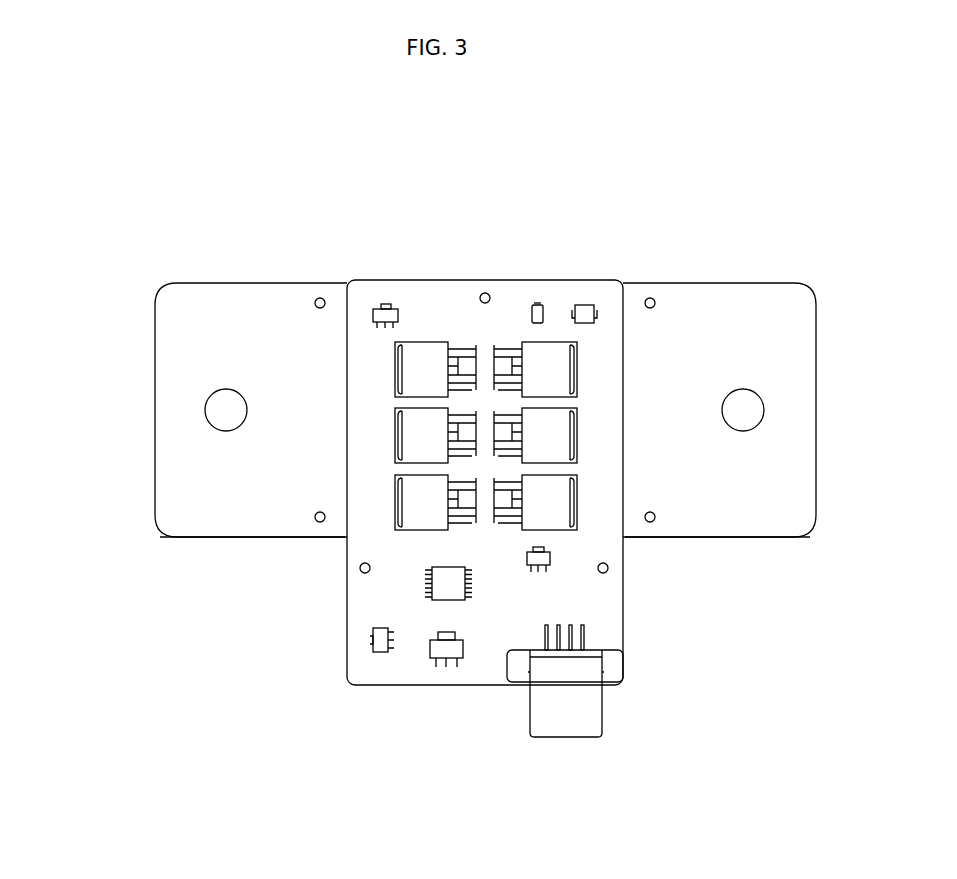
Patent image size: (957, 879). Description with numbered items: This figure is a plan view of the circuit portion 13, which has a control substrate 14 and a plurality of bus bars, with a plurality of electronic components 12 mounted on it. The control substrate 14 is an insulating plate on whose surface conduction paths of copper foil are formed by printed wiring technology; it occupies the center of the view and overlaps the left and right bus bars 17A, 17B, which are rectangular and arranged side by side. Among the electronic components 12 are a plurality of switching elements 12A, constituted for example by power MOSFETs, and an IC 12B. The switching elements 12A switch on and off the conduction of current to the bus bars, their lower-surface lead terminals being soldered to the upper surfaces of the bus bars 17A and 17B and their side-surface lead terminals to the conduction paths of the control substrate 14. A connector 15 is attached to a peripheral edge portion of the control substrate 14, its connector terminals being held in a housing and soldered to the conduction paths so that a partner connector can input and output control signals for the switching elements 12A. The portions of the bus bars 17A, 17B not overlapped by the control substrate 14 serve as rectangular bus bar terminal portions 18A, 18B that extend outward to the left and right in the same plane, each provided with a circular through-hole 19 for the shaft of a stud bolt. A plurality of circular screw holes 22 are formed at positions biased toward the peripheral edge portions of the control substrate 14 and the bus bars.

The electronic components 12 is at (533, 570).
The switching elements 12A is at (420, 505).
The IC 12B is at (440, 585).
The circuit portion 13 is at (716, 192).
The control substrate 14 is at (436, 292).
The connector 15 is at (587, 715).
The bus bar 17A is at (138, 421).
The bus bar 17B is at (836, 420).
The bus bar terminal portion 18A is at (227, 508).
The bus bar terminal portion 18B is at (757, 518).
The through-hole 19 is at (206, 412).
The screw holes 22 is at (320, 298).